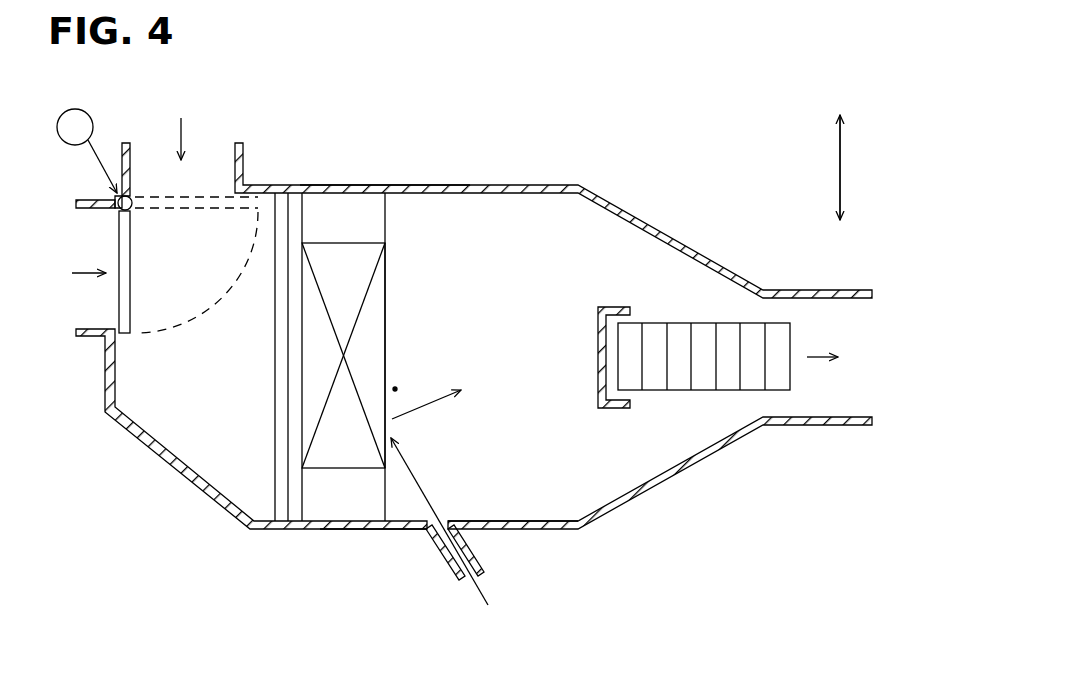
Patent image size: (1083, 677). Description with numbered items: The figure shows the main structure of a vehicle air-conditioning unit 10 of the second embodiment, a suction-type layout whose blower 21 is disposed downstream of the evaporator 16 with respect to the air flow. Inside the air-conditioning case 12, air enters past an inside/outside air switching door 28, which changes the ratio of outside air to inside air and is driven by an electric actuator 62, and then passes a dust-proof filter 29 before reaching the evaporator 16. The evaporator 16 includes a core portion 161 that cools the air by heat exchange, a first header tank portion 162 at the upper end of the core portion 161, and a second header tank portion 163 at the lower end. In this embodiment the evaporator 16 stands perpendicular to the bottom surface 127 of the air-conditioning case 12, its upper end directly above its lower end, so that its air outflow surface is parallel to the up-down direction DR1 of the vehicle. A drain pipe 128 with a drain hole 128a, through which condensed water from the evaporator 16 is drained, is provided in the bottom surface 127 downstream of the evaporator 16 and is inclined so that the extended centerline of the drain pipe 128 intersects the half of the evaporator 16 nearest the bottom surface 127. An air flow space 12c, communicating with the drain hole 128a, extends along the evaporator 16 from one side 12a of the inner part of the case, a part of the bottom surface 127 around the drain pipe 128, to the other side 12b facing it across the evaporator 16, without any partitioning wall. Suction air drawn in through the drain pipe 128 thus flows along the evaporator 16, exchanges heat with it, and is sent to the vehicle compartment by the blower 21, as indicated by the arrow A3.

The vehicle air-conditioning unit 10 is at (604, 113).
The air-conditioning case 12 is at (524, 185).
The one side of the inner part of the air-conditioning case 12a is at (408, 517).
The other side of the inner part of the air-conditioning case 12b is at (425, 188).
The air flow space 12c is at (348, 508).
The bottom surface of the air-conditioning case 127 is at (497, 518).
The drain pipe 128 is at (445, 573).
The drain hole 128a is at (465, 577).
The evaporator 16 is at (389, 255).
The core portion 161 is at (373, 305).
The first header tank portion 162 is at (358, 210).
The second header tank portion 163 is at (320, 500).
The blower 21 is at (699, 332).
The inside/outside air switching door 28 is at (118, 228).
The dust-proof filter 29 is at (272, 225).
The electric actuator 62 is at (77, 108).
The arrow A3 is at (440, 405).
The up-down direction DR1 is at (841, 165).